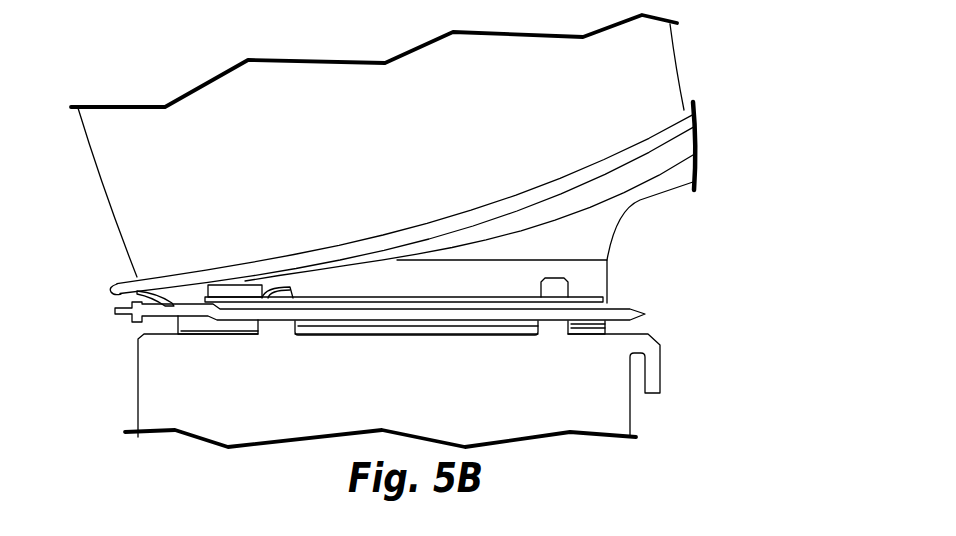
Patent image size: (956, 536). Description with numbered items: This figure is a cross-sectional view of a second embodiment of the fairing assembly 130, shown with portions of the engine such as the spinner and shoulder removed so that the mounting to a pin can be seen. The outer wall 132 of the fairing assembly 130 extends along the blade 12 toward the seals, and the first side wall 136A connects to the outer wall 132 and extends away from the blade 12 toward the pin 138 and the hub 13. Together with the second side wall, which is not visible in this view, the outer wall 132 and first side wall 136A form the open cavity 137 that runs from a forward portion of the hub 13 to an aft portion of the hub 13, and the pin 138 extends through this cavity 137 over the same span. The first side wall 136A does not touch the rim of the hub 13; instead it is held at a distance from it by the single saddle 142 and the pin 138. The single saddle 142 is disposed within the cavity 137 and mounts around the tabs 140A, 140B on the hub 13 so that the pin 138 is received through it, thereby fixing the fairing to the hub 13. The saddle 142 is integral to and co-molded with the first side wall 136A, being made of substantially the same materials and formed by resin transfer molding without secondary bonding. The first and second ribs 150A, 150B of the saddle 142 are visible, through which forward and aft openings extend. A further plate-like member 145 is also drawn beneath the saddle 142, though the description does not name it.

The blade 12 is at (130, 198).
The hub 13 is at (620, 423).
The fairing assembly 130 is at (401, 205).
The outer wall 132 is at (589, 174).
The first side wall 136A is at (642, 201).
The cavity 137 is at (663, 181).
The pin 138 is at (403, 311).
The tab 140A is at (277, 322).
The tab 140B is at (556, 327).
The single saddle 142 is at (595, 288).
The plate 145 is at (387, 296).
The first rib 150A is at (250, 298).
The second rib 150B is at (521, 298).